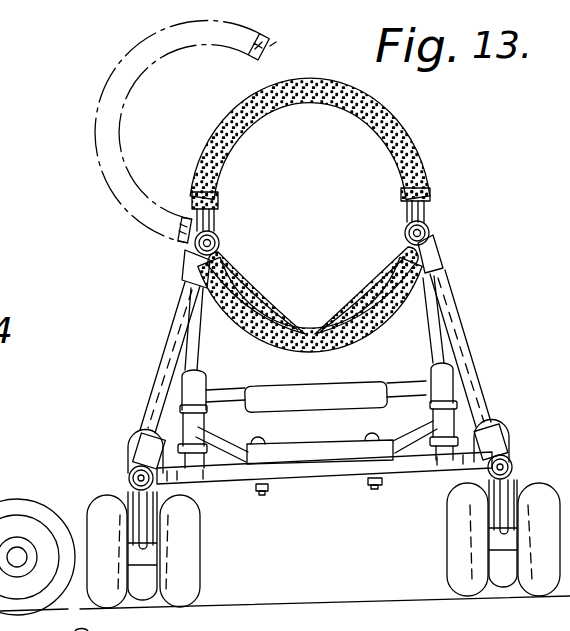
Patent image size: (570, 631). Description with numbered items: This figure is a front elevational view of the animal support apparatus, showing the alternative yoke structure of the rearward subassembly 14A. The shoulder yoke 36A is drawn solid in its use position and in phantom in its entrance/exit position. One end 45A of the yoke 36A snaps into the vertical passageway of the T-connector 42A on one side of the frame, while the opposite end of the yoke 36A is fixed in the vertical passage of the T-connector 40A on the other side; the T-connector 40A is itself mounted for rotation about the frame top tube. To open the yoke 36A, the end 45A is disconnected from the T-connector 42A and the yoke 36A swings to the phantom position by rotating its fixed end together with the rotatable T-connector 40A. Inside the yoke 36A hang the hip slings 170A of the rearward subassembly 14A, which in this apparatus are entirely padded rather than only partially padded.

The rearward subassembly 14A is at (171, 280).
The shoulder yoke 36A is at (228, 133).
The T-connector 40A is at (213, 266).
The T-connector 42A is at (428, 232).
The end of yoke 45A is at (276, 43).
The hip sling 170A is at (367, 299).